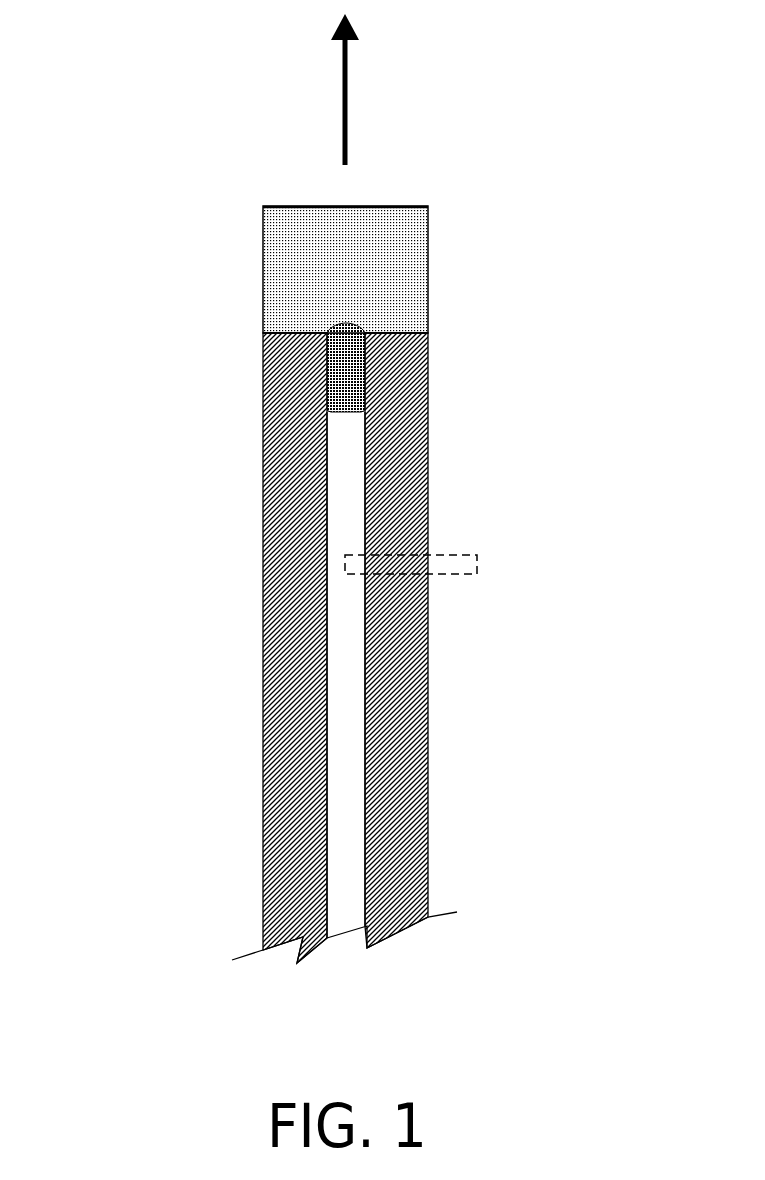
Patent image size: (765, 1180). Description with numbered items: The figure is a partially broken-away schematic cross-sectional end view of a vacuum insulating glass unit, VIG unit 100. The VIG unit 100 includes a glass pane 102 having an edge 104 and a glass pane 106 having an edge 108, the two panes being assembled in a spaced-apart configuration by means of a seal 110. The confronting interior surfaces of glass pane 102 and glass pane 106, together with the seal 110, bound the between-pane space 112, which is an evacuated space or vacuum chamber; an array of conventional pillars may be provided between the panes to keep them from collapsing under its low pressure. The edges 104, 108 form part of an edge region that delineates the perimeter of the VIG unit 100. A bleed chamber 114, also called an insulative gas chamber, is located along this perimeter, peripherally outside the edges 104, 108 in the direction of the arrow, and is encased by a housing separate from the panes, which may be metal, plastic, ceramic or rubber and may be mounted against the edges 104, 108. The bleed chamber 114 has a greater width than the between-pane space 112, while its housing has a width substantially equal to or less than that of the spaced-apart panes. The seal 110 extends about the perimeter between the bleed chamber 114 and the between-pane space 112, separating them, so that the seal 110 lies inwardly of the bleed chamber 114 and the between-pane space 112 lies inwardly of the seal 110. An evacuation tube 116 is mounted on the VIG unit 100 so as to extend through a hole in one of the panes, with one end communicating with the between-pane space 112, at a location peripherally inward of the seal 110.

The VIG unit 100 is at (309, 488).
The glass pane 102 is at (287, 670).
The edge 104 is at (287, 332).
The glass pane 106 is at (405, 670).
The edge 108 is at (397, 333).
The seal 110 is at (343, 385).
The between-pane space 112 is at (350, 500).
The bleed chamber 114 is at (367, 255).
The evacuation tube 116 is at (475, 567).